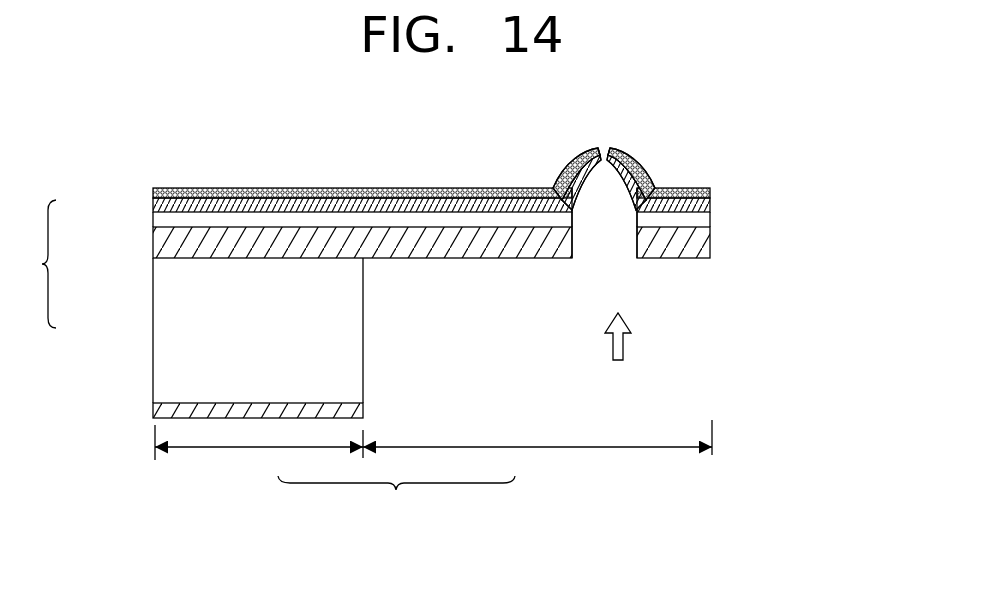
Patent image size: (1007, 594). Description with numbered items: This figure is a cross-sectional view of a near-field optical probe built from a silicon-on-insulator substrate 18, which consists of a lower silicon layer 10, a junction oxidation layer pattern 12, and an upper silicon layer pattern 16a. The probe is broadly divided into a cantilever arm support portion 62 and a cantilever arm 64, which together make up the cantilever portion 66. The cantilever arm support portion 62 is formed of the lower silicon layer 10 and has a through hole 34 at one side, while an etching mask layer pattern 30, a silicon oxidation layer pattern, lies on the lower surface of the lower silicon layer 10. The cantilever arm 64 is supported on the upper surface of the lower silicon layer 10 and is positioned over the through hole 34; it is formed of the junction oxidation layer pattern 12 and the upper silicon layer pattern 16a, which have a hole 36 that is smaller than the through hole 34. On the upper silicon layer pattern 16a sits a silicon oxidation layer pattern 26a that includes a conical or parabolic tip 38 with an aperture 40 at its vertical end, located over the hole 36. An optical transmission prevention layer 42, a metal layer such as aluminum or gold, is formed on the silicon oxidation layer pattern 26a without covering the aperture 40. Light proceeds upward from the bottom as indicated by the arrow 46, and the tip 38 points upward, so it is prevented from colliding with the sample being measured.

The lower silicon layer 10 is at (165, 330).
The junction oxidation layer pattern 12 is at (152, 240).
The upper silicon layer pattern 16a is at (155, 220).
The SOI substrate 18 is at (38, 264).
The silicon oxidation layer pattern 26a is at (709, 200).
The etching mask layer pattern 30 is at (158, 410).
The through hole 34 is at (432, 348).
The hole 36 is at (614, 233).
The tip 38 is at (620, 208).
The aperture 40 is at (604, 150).
The optical transmission prevention layer 42 is at (709, 189).
The light propagation direction 46 is at (625, 342).
The cantilever arm support portion 62 is at (259, 450).
The cantilever arm 64 is at (537, 448).
The cantilever portion 66 is at (396, 495).